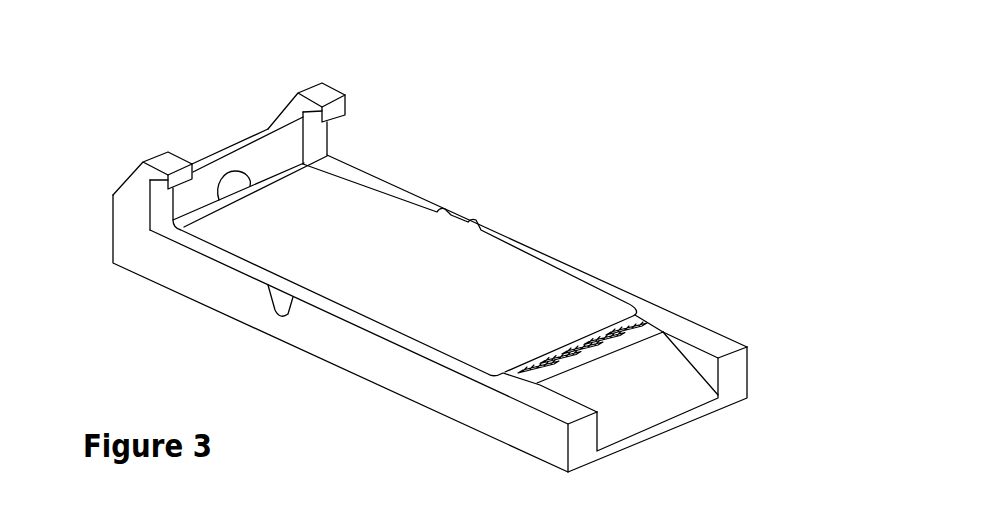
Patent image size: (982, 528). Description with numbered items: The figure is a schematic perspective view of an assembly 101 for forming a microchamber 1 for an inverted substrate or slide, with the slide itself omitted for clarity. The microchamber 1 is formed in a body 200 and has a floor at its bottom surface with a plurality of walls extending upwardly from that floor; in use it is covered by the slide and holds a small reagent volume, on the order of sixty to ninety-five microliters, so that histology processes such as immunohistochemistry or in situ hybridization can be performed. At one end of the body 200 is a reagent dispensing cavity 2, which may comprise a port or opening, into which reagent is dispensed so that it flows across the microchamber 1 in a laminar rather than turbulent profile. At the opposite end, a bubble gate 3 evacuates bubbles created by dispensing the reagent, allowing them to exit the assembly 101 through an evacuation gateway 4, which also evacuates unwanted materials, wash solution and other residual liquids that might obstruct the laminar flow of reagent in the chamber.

The assembly 101 is at (399, 245).
The body 200 is at (230, 296).
The microchamber 1 is at (395, 253).
The reagent dispensing cavity 2 is at (230, 167).
The bubble gate 3 is at (600, 350).
The evacuation gateway 4 is at (618, 402).